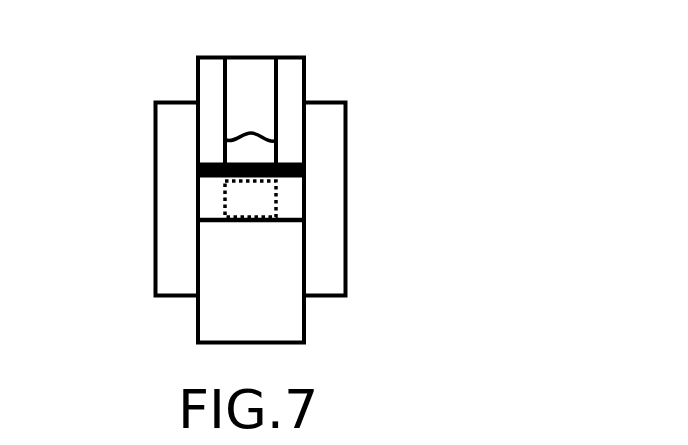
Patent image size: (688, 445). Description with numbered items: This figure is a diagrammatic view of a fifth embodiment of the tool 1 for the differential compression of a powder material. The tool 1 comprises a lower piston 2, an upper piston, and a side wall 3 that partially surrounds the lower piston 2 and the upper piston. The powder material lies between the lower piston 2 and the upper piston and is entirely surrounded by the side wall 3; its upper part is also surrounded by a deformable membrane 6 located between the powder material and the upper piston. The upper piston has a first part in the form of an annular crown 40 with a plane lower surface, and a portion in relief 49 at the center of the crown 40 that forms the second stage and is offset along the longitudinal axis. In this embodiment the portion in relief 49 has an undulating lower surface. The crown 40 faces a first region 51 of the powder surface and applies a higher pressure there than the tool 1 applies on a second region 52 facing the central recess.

The tool 1 is at (270, 176).
The lower piston 2 is at (217, 322).
The side wall 3 is at (170, 153).
The deformable membrane 6 is at (305, 170).
The crown 40 is at (210, 81).
The portion in relief 49 is at (247, 82).
The first region 51 is at (292, 205).
The second region 52 is at (237, 195).